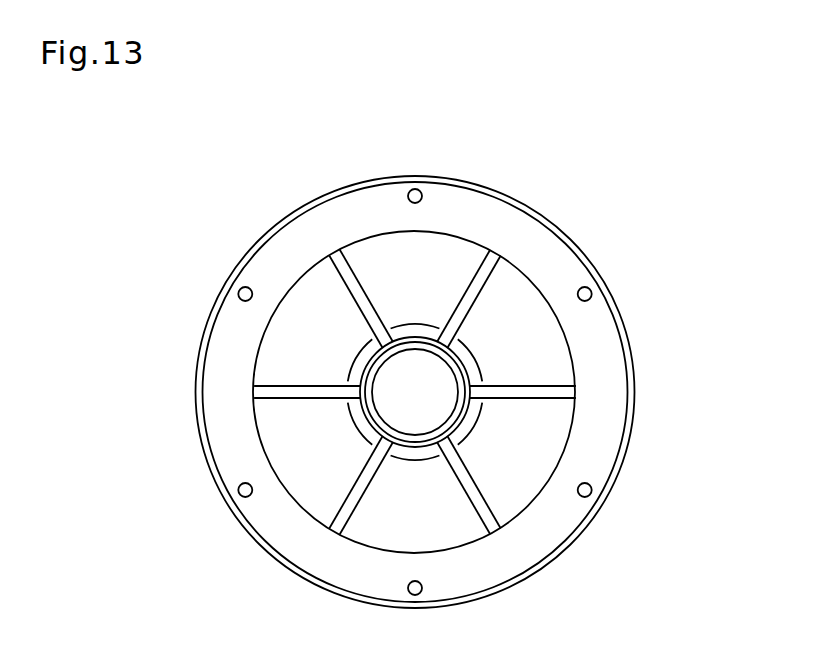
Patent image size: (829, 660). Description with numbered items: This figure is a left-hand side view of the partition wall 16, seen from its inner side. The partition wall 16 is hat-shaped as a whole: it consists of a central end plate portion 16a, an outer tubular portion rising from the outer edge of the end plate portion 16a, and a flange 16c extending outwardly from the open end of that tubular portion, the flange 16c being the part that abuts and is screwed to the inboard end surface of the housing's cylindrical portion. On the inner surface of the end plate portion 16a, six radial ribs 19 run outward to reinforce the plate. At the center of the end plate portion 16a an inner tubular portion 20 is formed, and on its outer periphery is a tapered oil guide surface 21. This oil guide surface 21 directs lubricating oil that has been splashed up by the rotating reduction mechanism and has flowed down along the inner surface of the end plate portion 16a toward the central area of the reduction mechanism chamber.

The partition wall 16 is at (208, 313).
The end plate portion 16a is at (320, 287).
The flange 16c is at (218, 440).
The radial ribs 19 is at (370, 292).
The inner tubular portion 20 is at (458, 342).
The oil guide surface 21 is at (473, 370).